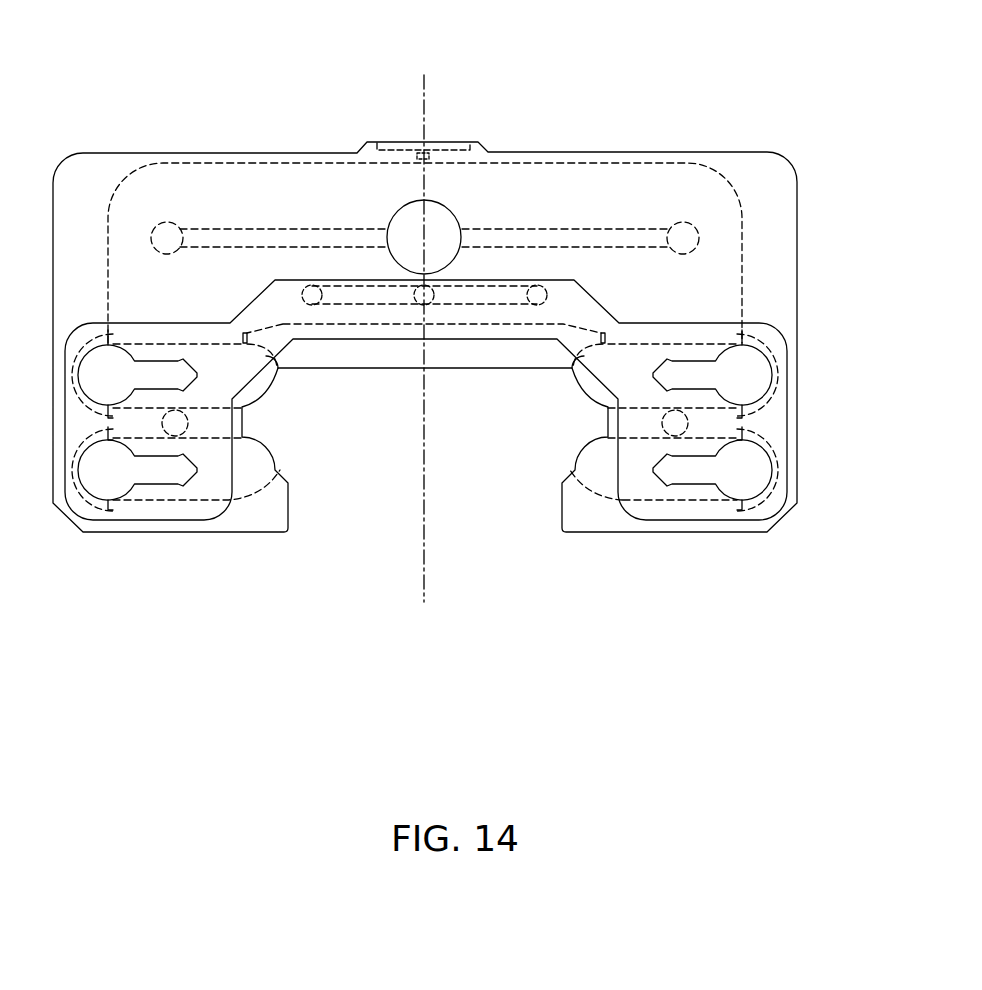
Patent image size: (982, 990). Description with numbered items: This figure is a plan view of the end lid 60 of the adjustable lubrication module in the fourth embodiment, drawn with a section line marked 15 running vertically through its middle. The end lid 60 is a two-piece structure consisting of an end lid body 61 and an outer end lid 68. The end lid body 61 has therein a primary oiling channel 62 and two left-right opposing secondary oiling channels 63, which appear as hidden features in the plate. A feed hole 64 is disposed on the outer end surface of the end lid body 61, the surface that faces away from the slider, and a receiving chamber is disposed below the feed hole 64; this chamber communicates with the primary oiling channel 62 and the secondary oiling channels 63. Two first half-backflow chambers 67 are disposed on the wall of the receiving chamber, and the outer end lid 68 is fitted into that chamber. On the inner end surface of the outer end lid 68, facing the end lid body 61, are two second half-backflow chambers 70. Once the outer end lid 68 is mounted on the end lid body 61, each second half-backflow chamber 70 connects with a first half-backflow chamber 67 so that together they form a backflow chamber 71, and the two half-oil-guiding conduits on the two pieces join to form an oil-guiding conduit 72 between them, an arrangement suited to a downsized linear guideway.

The section line 15- 15 is at (424, 75).
The end lid 60 is at (822, 77).
The end lid body 61 is at (748, 170).
The primary oiling channel 62 is at (415, 297).
The secondary oiling channels 63 is at (310, 287).
The feed hole 64 is at (438, 225).
The first half-backflow chambers 67 is at (168, 482).
The outer end lid 68 is at (765, 330).
The second half-backflow chambers 70 is at (87, 503).
The backflow chamber 71 is at (208, 598).
The oil-guiding conduit 72 is at (486, 303).